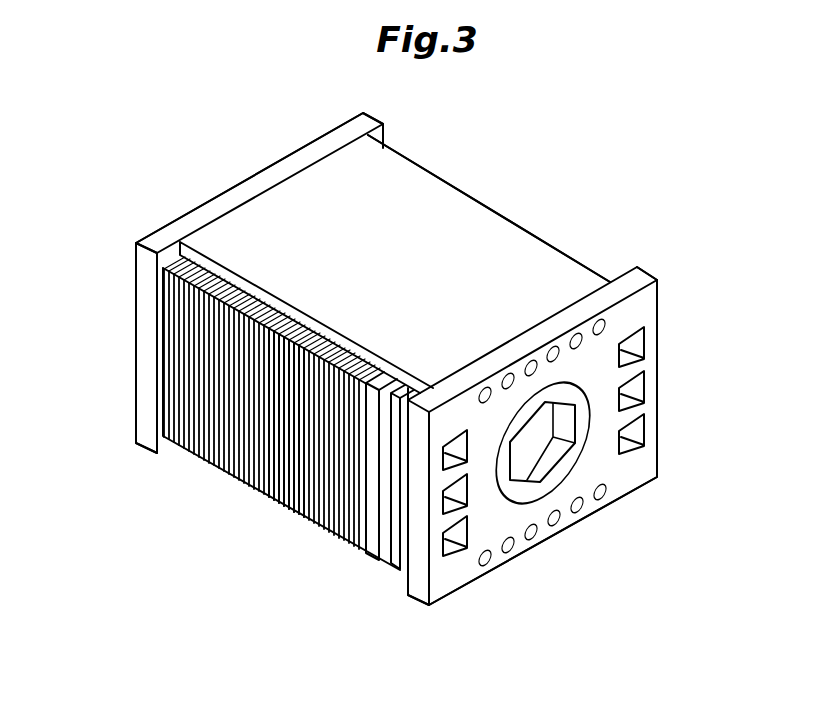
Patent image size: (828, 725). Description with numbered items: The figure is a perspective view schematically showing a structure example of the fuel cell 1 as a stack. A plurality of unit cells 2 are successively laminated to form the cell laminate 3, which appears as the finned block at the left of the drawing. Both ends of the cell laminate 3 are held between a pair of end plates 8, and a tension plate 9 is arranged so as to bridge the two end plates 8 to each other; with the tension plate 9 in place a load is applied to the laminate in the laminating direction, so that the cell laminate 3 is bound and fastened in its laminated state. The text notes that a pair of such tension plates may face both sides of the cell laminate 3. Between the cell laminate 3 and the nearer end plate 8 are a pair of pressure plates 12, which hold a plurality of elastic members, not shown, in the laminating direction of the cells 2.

The fuel cell 1 is at (141, 214).
The unit cell 2 is at (305, 517).
The cell laminate 3 is at (228, 478).
The end plate 8 is at (373, 117).
The tension plate 9 is at (457, 224).
The pressure plate 12 is at (370, 555).